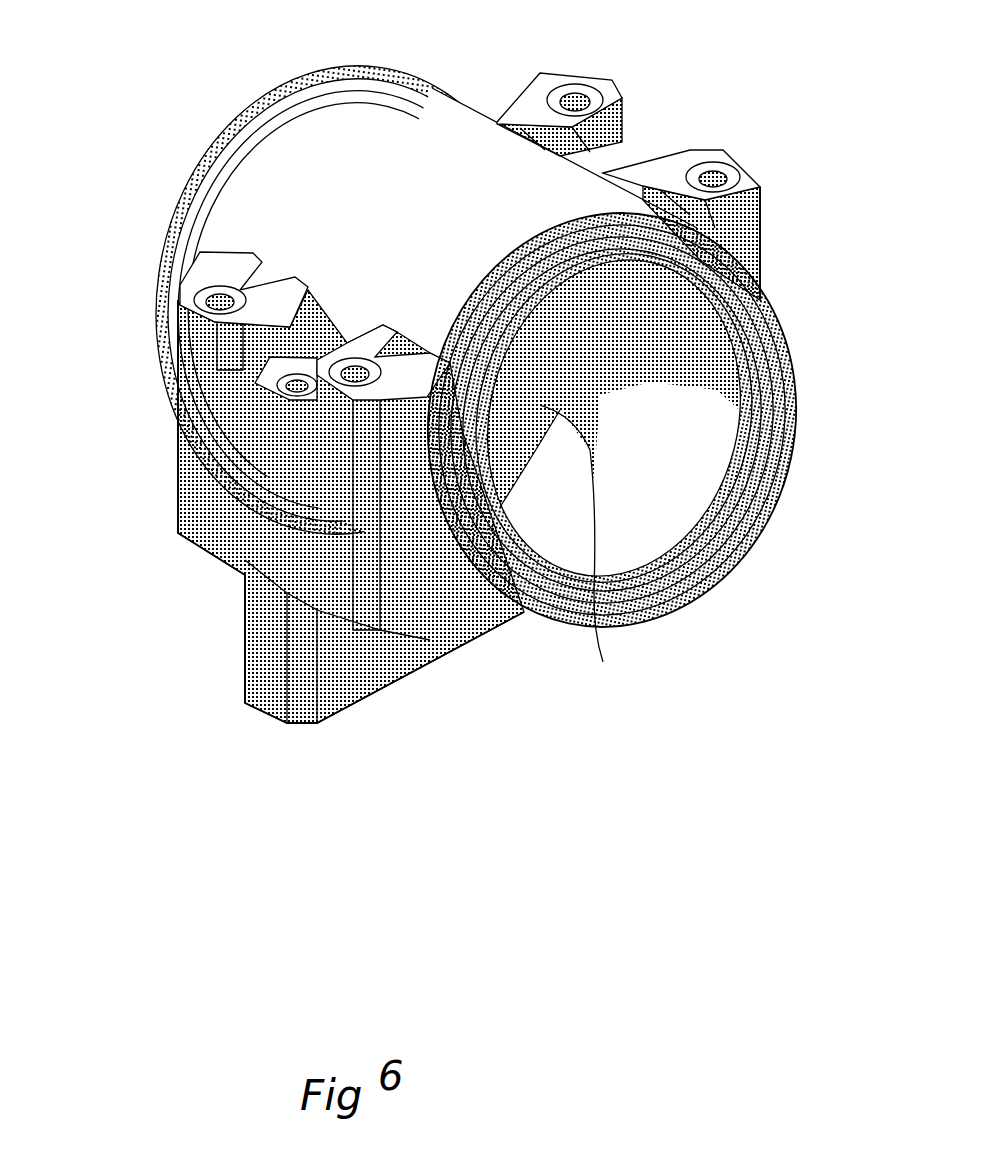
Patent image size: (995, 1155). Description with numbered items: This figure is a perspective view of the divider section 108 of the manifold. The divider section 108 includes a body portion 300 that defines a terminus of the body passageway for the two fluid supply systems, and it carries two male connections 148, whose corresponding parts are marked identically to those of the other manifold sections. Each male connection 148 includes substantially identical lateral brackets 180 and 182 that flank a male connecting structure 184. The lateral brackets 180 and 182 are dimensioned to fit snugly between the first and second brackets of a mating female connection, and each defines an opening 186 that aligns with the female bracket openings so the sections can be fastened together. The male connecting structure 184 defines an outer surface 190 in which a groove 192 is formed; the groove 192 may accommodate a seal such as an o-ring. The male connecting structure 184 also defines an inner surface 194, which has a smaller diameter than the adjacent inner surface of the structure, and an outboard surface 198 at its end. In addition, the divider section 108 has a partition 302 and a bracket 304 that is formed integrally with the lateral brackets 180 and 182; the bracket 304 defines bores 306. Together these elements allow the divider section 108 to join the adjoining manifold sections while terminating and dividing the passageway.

The divider section 108 is at (770, 236).
The male connection 148 is at (290, 102).
The lateral bracket 180 is at (412, 640).
The lateral bracket 182 is at (176, 440).
The male connecting structure 184 is at (177, 283).
The opening 186 is at (216, 304).
The outer surface 190 is at (500, 258).
The groove 192 is at (237, 157).
The inner surface 194 is at (690, 509).
The outboard surface 198 is at (832, 551).
The body portion 300 is at (446, 112).
The partition 302 is at (580, 554).
The bracket 304 is at (638, 170).
The bore 306 is at (652, 156).